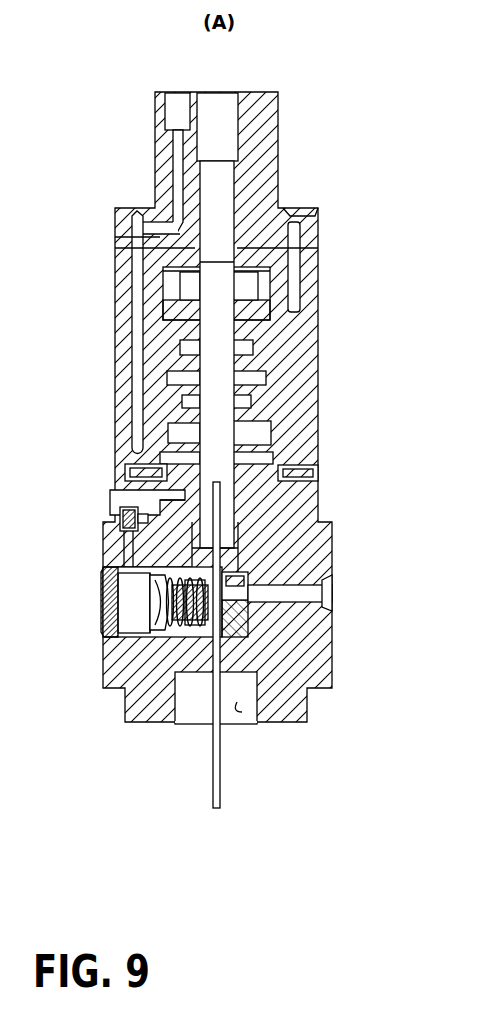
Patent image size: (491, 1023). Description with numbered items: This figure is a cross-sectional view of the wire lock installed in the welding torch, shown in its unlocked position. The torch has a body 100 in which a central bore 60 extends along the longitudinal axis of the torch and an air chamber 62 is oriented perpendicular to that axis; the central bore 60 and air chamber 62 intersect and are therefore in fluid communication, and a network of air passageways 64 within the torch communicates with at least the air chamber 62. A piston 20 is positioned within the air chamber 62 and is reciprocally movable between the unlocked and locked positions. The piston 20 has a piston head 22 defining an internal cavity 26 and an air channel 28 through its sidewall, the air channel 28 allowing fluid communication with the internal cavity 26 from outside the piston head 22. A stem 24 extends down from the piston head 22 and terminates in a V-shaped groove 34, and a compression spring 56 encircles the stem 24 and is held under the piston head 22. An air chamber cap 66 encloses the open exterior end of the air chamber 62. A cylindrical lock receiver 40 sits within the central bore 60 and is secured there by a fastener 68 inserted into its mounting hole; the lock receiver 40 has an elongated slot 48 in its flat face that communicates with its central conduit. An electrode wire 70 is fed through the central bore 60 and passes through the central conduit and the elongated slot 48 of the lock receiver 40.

The body 100 is at (335, 530).
The piston 20 is at (125, 641).
The piston head 22 is at (150, 646).
The stem 24 is at (195, 640).
The internal cavity 26 is at (143, 592).
The air channel 28 is at (116, 548).
The V-shaped groove 34 is at (250, 600).
The lock receiver 40 is at (256, 630).
The elongated slot 48 is at (208, 645).
The compression spring 56 is at (177, 641).
The central bore 60 is at (242, 712).
The air chamber 62 is at (121, 510).
The air passageways 64 is at (175, 582).
The air chamber cap 66 is at (105, 618).
The fastener 68 is at (333, 594).
The electrode wire 70 is at (213, 795).